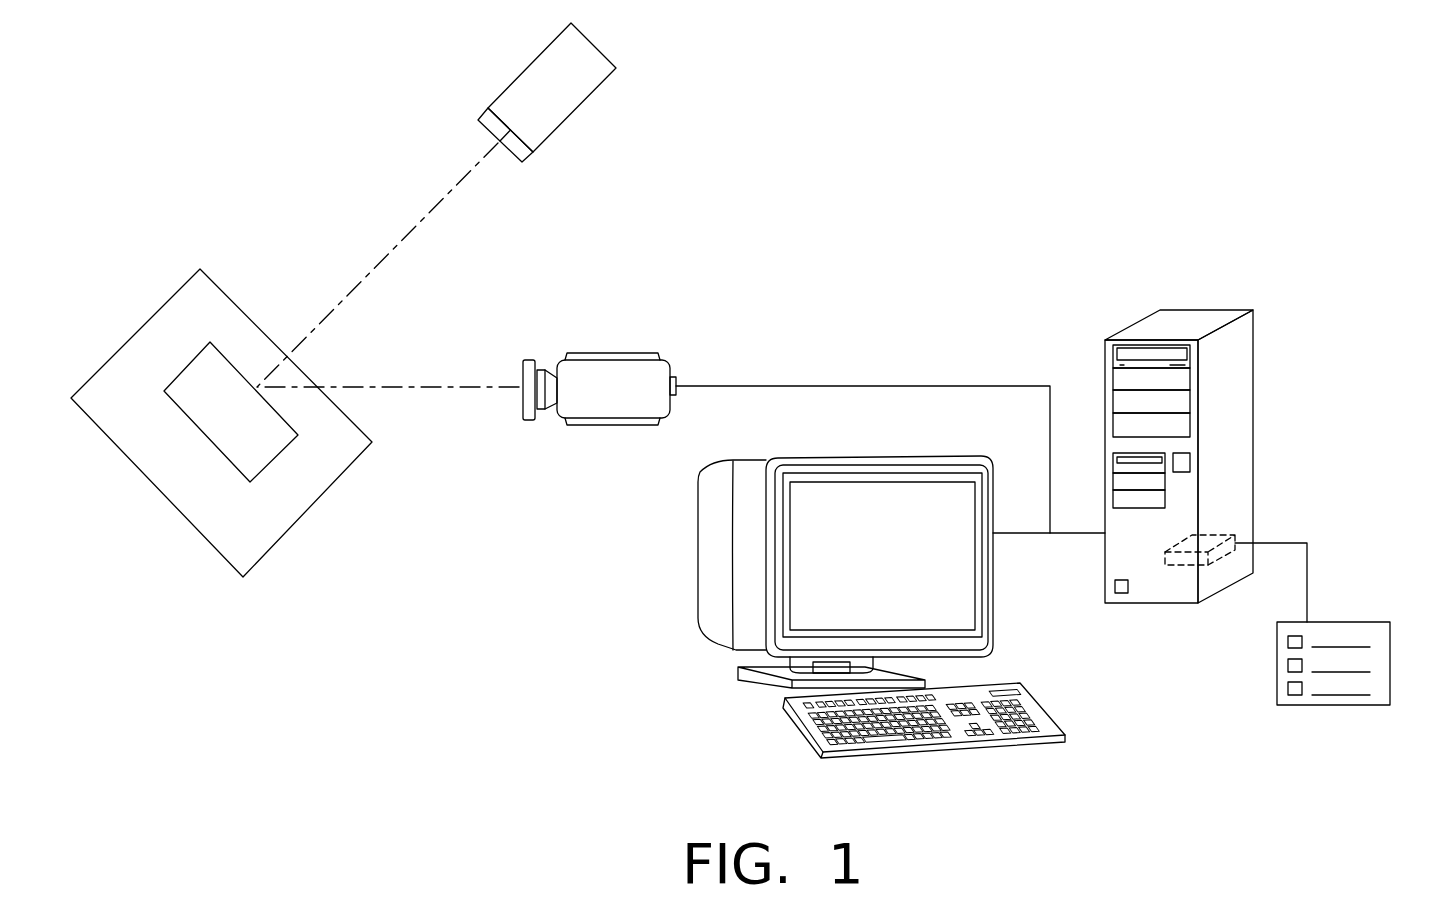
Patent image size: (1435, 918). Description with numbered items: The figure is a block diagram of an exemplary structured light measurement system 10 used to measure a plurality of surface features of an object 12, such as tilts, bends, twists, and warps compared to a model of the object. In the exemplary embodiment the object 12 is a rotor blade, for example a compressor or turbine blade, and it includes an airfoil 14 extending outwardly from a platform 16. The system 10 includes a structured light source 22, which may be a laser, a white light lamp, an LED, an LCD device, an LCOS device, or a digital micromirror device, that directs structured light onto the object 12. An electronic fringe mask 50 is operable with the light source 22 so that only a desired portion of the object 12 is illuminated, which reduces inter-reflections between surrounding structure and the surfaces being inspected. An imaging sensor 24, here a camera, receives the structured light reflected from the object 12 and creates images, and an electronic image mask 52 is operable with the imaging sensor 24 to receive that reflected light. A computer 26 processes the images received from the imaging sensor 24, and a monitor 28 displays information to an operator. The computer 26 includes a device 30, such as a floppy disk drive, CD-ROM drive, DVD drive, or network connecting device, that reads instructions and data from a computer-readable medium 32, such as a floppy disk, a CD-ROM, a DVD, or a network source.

The structured light measurement system 10 is at (665, 90).
The object 12 is at (176, 240).
The airfoil 14 is at (263, 440).
The platform 16 is at (257, 539).
The structured light source 22 is at (532, 62).
The imaging sensor 24 is at (612, 353).
The computer 26 is at (1133, 323).
The monitor 28 is at (698, 552).
The device 30 is at (1185, 565).
The computer-readable medium 32 is at (1350, 622).
The electronic fringe mask 50 is at (528, 158).
The electronic image mask 52 is at (528, 360).